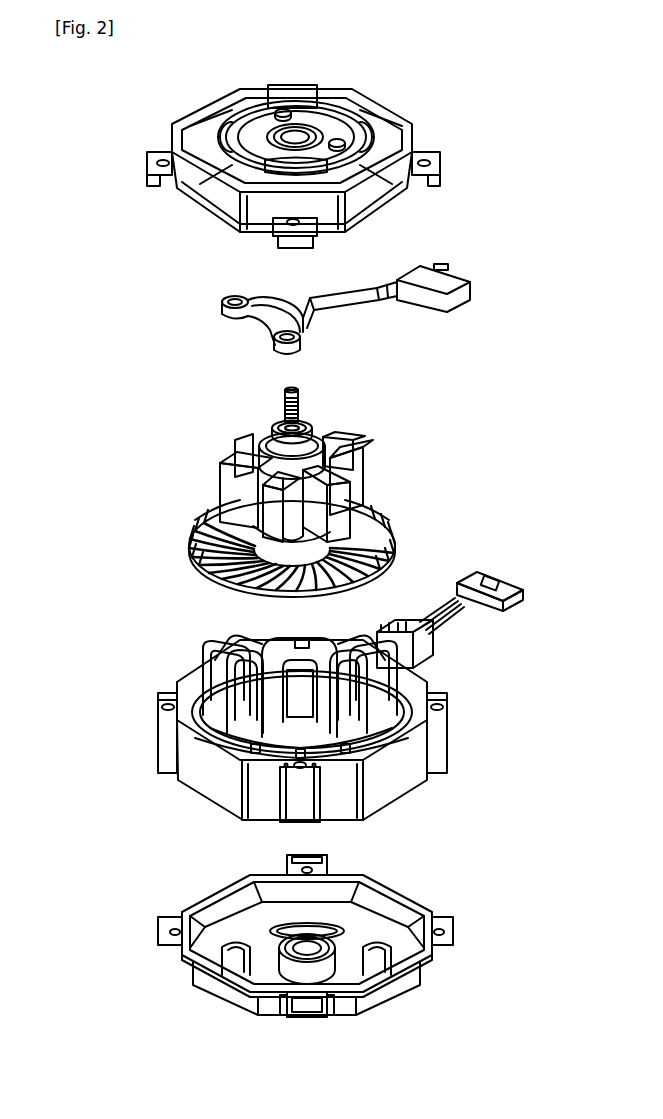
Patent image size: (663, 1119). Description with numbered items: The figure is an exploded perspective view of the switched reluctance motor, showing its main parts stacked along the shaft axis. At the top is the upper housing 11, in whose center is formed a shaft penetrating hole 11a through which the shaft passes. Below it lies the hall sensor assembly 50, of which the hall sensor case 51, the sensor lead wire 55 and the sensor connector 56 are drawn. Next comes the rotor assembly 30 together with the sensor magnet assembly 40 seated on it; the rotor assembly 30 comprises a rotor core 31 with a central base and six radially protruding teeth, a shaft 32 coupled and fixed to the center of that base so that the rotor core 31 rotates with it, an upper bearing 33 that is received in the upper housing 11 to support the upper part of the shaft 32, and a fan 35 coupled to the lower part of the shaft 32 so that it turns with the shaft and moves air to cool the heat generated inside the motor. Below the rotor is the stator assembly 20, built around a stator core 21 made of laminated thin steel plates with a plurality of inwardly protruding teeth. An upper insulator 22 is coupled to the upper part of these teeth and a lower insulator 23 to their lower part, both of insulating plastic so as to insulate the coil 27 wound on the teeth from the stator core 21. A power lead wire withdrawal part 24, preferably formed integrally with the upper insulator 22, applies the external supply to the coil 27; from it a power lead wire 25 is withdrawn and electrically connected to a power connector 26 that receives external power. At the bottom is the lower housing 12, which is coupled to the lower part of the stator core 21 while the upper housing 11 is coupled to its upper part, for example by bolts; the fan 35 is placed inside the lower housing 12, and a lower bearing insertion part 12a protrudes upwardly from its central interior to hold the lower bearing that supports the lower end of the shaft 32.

The upper housing 11 is at (383, 193).
The shaft penetrating hole 11a is at (312, 130).
The lower housing 12 is at (217, 892).
The lower bearing insertion part 12a is at (340, 927).
The stator assembly 20 is at (316, 694).
The stator core 21 is at (403, 783).
The upper insulator 22 is at (207, 670).
The lower insulator 23 is at (270, 818).
The power lead wire withdrawal part 24 is at (427, 657).
The power lead wire 25 is at (473, 603).
The power connector 26 is at (503, 585).
The coil 27 is at (390, 697).
The rotor assembly 30 is at (292, 487).
The rotor core 31 is at (358, 470).
The shaft 32 is at (298, 391).
The upper bearing 33 is at (272, 424).
The fan 35 is at (395, 525).
The sensor magnet assembly 40 is at (326, 440).
The hall sensor assembly 50 is at (336, 312).
The hall sensor case 51 is at (257, 317).
The sensor lead wire 55 is at (398, 302).
The sensor connector 56 is at (440, 298).